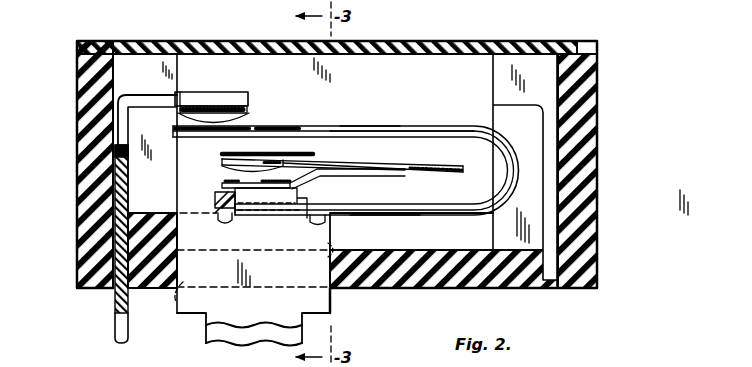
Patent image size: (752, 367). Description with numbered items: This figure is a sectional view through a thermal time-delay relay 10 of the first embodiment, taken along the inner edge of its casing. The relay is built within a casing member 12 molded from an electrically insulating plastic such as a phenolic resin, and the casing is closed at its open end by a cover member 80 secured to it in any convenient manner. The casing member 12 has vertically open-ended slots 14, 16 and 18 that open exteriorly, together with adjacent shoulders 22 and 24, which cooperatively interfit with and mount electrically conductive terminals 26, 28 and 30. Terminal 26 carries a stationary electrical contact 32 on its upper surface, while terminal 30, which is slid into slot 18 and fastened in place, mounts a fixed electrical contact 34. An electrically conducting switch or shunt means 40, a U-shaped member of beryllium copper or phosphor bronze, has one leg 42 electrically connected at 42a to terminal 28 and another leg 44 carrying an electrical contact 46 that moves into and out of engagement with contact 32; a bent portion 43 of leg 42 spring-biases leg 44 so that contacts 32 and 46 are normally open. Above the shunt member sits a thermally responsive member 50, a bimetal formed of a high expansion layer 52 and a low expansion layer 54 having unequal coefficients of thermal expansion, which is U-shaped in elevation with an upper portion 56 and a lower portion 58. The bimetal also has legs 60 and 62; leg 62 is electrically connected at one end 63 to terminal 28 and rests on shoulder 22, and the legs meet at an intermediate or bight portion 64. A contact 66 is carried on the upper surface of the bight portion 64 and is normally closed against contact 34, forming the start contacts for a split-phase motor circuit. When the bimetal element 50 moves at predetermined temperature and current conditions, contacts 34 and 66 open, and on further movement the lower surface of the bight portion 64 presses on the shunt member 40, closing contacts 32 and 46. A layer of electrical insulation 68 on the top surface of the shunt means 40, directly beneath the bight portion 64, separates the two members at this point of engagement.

The thermal time-delay relay 10 is at (619, 65).
The casing member 12 is at (583, 135).
The slot 14 is at (323, 278).
The slot 16 is at (329, 251).
The slot 18 is at (85, 188).
The shoulder 22 is at (158, 213).
The shoulder 24 is at (147, 106).
The terminal 26 is at (239, 334).
The terminal 28 is at (218, 200).
The terminal 30 is at (229, 97).
The stationary electrical contact 32 is at (223, 184).
The fixed electrical contact 34 is at (203, 107).
The switch means or shunt means 40 is at (425, 178).
The leg 42 is at (380, 173).
The connection point of leg 42 42a is at (299, 199).
The bent portion 43 is at (324, 189).
The leg 44 is at (346, 173).
The electrical contact 46 is at (228, 167).
The thermally responsive member 50 is at (346, 161).
The high expansion layer 52 is at (395, 127).
The low expansion layer 54 is at (391, 137).
The upper portion 56 is at (350, 125).
The lower portion 58 is at (374, 217).
The leg 60 is at (299, 126).
The leg 62 is at (339, 127).
The end of leg 62 63 is at (231, 221).
The intermediate or bight portion 64 is at (267, 126).
The contact 66 is at (249, 123).
The layer of electrical insulation 68 is at (228, 153).
The cover member 80 is at (476, 45).